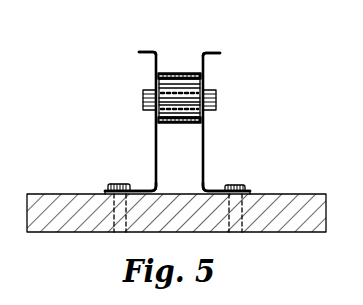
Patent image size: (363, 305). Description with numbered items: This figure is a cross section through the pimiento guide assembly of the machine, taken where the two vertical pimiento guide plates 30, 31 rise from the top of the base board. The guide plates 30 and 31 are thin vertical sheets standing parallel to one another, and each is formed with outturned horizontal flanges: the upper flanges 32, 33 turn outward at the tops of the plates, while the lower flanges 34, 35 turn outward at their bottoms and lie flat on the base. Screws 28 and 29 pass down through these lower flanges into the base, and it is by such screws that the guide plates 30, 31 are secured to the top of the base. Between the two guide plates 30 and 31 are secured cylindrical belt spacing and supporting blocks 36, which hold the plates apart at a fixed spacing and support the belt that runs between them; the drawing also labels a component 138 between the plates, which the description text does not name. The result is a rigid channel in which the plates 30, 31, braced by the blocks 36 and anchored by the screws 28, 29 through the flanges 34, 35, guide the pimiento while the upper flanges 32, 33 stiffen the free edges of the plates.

The screw 28 is at (243, 185).
The screw 29 is at (111, 184).
The vertical pimiento guide plate 30 is at (155, 137).
The vertical pimiento guide plate 31 is at (205, 137).
The upper outturned horizontal flange 32 is at (140, 52).
The upper outturned horizontal flange 33 is at (219, 53).
The lower outturned horizontal flange 34 is at (142, 190).
The lower outturned horizontal flange 35 is at (209, 190).
The cylindrical belt spacing and supporting block 36 is at (205, 81).
The roller 138 is at (181, 72).